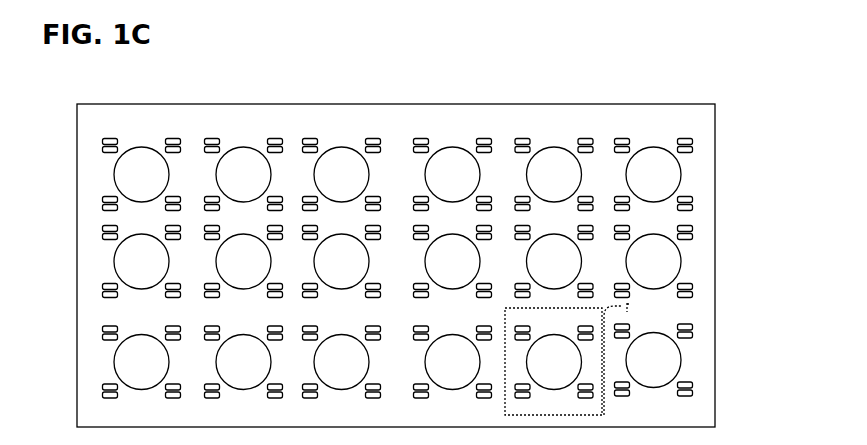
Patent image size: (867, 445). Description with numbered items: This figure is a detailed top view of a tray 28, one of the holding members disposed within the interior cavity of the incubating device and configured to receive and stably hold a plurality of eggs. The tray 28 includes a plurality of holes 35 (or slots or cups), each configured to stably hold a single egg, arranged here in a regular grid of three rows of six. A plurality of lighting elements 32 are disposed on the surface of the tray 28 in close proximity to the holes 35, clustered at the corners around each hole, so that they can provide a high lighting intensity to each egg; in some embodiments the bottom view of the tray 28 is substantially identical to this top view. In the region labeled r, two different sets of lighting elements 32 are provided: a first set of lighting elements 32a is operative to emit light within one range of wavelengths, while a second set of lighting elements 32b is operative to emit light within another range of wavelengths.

The tray 28 is at (690, 110).
The holes 35 is at (667, 163).
The lighting elements 32 is at (685, 223).
The first set of lighting elements 32a is at (590, 326).
The second set of lighting elements 32b is at (579, 340).